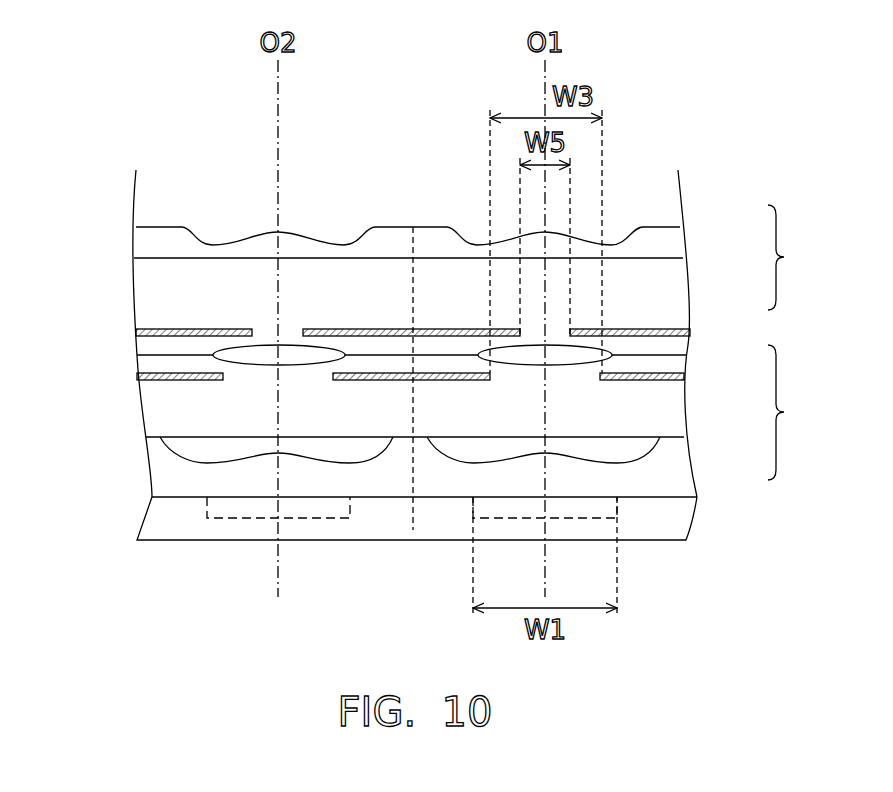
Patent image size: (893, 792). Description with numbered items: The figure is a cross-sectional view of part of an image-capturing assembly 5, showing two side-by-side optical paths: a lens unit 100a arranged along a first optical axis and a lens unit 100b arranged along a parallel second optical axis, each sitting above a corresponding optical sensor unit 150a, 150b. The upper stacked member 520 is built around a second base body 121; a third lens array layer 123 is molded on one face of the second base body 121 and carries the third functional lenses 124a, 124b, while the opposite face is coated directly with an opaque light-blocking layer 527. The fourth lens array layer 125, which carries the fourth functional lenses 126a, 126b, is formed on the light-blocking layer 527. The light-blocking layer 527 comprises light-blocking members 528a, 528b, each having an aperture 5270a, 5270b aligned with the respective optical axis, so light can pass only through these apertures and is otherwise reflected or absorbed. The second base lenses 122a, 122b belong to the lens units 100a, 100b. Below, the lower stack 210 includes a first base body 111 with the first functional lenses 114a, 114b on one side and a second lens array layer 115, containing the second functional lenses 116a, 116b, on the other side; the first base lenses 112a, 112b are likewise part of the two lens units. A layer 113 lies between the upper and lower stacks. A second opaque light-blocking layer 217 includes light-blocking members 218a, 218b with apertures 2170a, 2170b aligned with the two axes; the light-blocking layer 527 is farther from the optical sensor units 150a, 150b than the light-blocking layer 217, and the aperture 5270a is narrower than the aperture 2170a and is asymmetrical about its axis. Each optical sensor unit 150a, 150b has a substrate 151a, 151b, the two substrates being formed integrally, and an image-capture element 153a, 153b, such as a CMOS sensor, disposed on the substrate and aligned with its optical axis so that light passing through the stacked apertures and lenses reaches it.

The image-capturing assembly 5 is at (714, 110).
The lens unit 100a is at (478, 145).
The lens unit 100b is at (246, 145).
The aperture 2170a is at (580, 371).
The aperture 2170b is at (243, 371).
The aperture 5270a is at (530, 328).
The aperture 5270b is at (263, 328).
The third functional lens 124a is at (510, 246).
The third functional lens 124b is at (335, 239).
The second base lens 122a is at (448, 270).
The second base lens 122b is at (368, 270).
The third lens array layer 123 is at (672, 243).
The second base body 121 is at (681, 270).
The light-blocking layer 527 is at (667, 328).
The second stacked member 520 is at (802, 257).
The fourth lens array layer 125 is at (672, 345).
The light-blocking member 528a is at (625, 329).
The light-blocking member 528b is at (186, 329).
The fourth functional lens 126a is at (448, 340).
The fourth functional lens 126b is at (368, 340).
The encapsulation layer 113 is at (672, 362).
The light-blocking layer 217 is at (680, 378).
The first base body 111 is at (670, 410).
The second lens array layer 115 is at (637, 453).
The light emitting substrate 210 is at (802, 412).
The light-blocking member 218a is at (623, 381).
The light-blocking member 218b is at (182, 381).
The first base lens 112a is at (510, 425).
The first base lens 112b is at (312, 425).
The first functional lens 114a is at (448, 381).
The first functional lens 114b is at (368, 381).
The optical sensor unit 150a is at (682, 546).
The optical sensor unit 150b is at (142, 546).
The substrate 151a is at (650, 528).
The substrate 151b is at (165, 528).
The image-capture element 153a is at (578, 520).
The image-capture element 153b is at (240, 520).
The second functional lens 116a is at (463, 452).
The second functional lens 116b is at (373, 456).